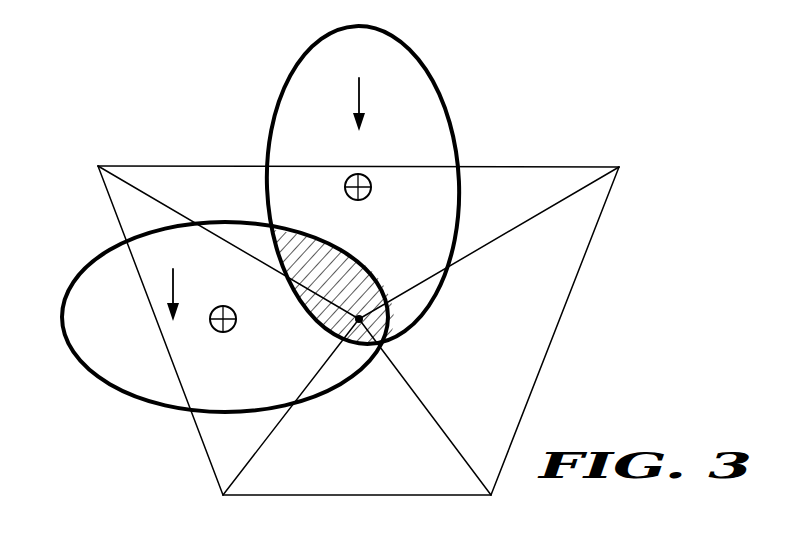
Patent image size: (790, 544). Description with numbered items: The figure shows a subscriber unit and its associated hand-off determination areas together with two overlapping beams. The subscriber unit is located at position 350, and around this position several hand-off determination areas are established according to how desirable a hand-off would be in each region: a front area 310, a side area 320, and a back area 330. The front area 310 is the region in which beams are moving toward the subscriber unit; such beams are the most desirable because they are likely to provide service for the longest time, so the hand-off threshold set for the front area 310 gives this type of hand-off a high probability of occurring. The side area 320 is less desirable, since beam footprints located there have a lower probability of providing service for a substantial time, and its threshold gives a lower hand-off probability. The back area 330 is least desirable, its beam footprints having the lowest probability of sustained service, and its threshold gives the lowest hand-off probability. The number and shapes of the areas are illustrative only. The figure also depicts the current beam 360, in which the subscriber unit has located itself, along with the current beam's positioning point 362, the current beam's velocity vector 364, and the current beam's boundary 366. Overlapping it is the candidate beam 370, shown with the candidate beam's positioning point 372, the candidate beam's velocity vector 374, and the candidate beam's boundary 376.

The front area 310 is at (518, 205).
The side area 320 is at (499, 347).
The back area 330 is at (378, 450).
The subscriber unit position 350 is at (353, 264).
The current beam 360 is at (142, 355).
The current beam's positioning point 362 is at (231, 327).
The current beam's velocity vector 364 is at (172, 275).
The current beam's boundary 366 is at (81, 274).
The candidate beam 370 is at (328, 135).
The candidate beam's positioning point 372 is at (366, 195).
The candidate beam's velocity vector 374 is at (359, 86).
The candidate beam's boundary 376 is at (323, 39).